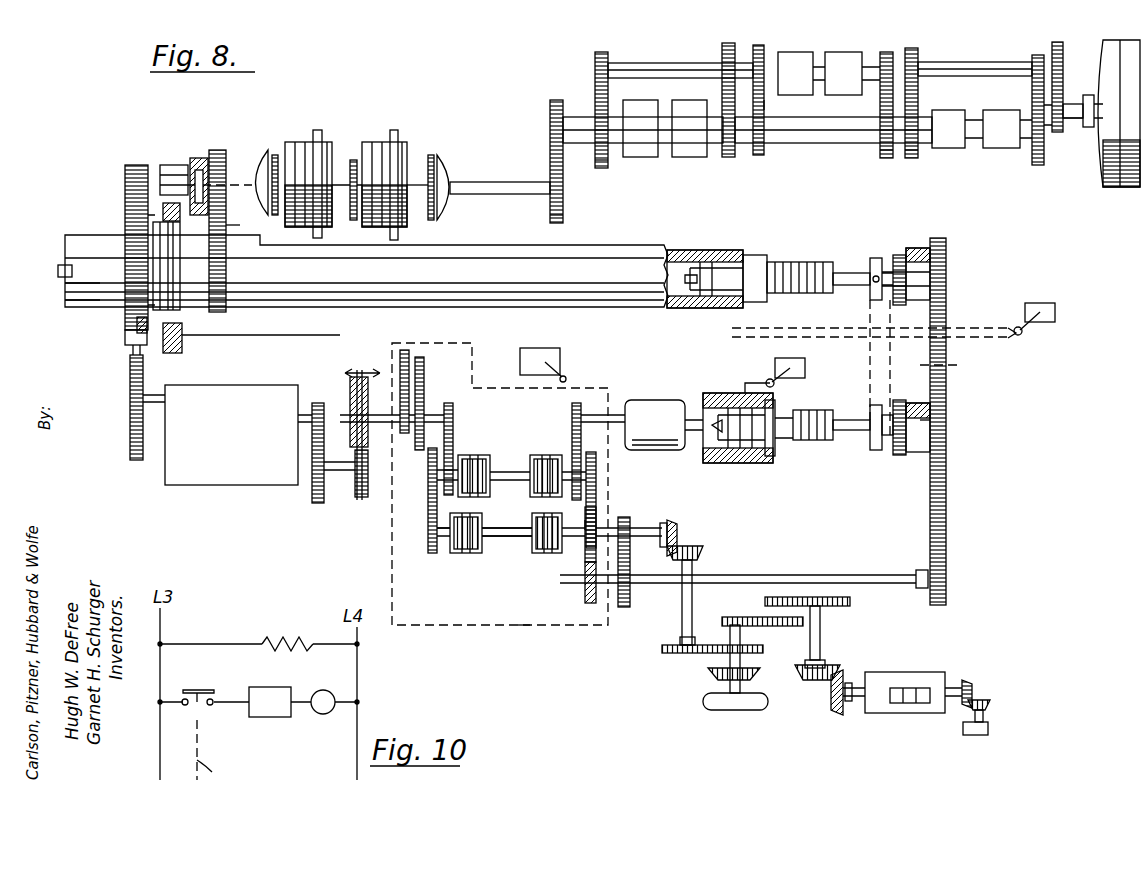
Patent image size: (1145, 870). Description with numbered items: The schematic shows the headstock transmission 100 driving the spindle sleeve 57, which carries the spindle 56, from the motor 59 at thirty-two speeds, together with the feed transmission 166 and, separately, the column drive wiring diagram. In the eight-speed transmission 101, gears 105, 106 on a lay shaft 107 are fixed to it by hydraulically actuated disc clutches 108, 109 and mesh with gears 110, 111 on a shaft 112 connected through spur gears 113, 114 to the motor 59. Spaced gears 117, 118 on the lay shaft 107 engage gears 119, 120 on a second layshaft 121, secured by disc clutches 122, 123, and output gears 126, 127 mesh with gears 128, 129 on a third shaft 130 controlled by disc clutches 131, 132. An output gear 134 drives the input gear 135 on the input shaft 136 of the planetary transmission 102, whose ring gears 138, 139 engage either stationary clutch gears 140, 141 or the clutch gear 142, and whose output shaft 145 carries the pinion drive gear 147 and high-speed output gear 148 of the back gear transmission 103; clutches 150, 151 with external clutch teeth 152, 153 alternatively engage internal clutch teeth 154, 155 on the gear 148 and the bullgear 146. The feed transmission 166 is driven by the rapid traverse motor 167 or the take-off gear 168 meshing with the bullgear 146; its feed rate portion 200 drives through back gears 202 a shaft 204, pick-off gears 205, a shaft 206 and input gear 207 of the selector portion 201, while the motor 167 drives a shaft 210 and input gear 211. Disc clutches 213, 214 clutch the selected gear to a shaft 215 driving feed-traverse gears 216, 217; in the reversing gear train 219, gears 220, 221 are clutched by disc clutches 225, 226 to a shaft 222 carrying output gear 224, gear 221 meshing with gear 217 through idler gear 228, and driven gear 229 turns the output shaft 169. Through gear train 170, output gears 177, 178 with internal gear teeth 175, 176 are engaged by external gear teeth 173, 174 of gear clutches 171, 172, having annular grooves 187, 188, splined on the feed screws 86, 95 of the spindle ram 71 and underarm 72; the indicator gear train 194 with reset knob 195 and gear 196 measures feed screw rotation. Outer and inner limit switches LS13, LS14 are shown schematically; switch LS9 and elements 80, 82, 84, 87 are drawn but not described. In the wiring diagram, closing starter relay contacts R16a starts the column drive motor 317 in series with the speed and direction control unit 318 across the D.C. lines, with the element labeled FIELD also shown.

In FIG. 8, the spindle 56 is at (64, 297).
In FIG. 8, the spindle sleeve 57 is at (95, 305).
In FIG. 8, the spindle sleeve motor 59 is at (1112, 55).
In FIG. 8, the spindle ram 71 is at (745, 250).
In FIG. 8, the underarm 72 is at (714, 393).
In FIG. 8, the bevel gear 80 is at (710, 676).
In FIG. 8, the counter 82 is at (905, 672).
In FIG. 8, the dial 84 is at (735, 710).
In FIG. 8, the feed screw 86 is at (810, 262).
In FIG. 8, the hub 87 is at (760, 262).
In FIG. 8, the feed screw 95 is at (810, 410).
In FIG. 8, the multi-speed transmission 100 is at (1038, 211).
In FIG. 8, the eight-speed transmission 101 is at (812, 166).
In FIG. 8, the three-speed planetary speed reduction transmission 102 is at (407, 124).
In FIG. 8, the two-speed high-low back gear transmission 103 is at (113, 217).
In FIG. 8, the gear 105 is at (1037, 165).
In FIG. 8, the gear 106 is at (910, 158).
In FIG. 8, the lay shaft 107 is at (872, 140).
In FIG. 8, the hydraulically actuated disc clutch 108 is at (1003, 140).
In FIG. 8, the hydraulically actuated disc clutch 109 is at (952, 140).
In FIG. 8, the gear 110 is at (1038, 55).
In FIG. 8, the gear 111 is at (914, 50).
In FIG. 8, the shaft 112 is at (972, 62).
In FIG. 8, the spur gear 113 is at (1060, 45).
In FIG. 8, the spur gear 114 is at (1058, 132).
In FIG. 8, the gear 117 is at (886, 158).
In FIG. 8, the gear 118 is at (764, 145).
In FIG. 8, the gear 119 is at (887, 52).
In FIG. 8, the gear 120 is at (758, 45).
In FIG. 8, the second layshaft 121 is at (818, 82).
In FIG. 8, the hydraulically actuated disc clutch 122 is at (848, 52).
In FIG. 8, the hydraulically actuated disc clutch 123 is at (795, 52).
In FIG. 8, the output gear 126 is at (722, 52).
In FIG. 8, the output gear 127 is at (603, 52).
In FIG. 8, the gear 128 is at (728, 157).
In FIG. 8, the gear 129 is at (600, 168).
In FIG. 8, the third shaft 130 is at (577, 117).
In FIG. 8, the hydraulically actuated disc clutch 131 is at (688, 150).
In FIG. 8, the hydraulically actuated disc clutch 132 is at (640, 150).
In FIG. 8, the output gear 134 is at (550, 127).
In FIG. 8, the input gear 135 is at (558, 215).
In FIG. 8, the input shaft 136 is at (480, 182).
In FIG. 8, the ring gear 138 is at (318, 142).
In FIG. 8, the ring gear 139 is at (448, 210).
In FIG. 8, the stationary clutch gear 140 is at (276, 155).
In FIG. 8, the stationary clutch gear 141 is at (432, 155).
In FIG. 8, the clutch gear 142 is at (354, 160).
In FIG. 8, the output shaft 145 is at (175, 144).
In FIG. 8, the bullgear 146 is at (132, 350).
In FIG. 8, the pinion drive gear 147 is at (125, 168).
In FIG. 8, the high-speed output gear 148 is at (220, 150).
In FIG. 8, the clutch 150 is at (175, 165).
In FIG. 8, the clutch 151 is at (172, 353).
In FIG. 8, the external clutch teeth 152 is at (235, 224).
In FIG. 8, the external clutch teeth 153 is at (150, 251).
In FIG. 8, the internal clutch teeth 154 is at (199, 158).
In FIG. 8, the internal clutch teeth 155 is at (130, 340).
In FIG. 8, the feed transmission 166 is at (294, 516).
In FIG. 8, the rapid traverse motor 167 is at (650, 400).
In FIG. 8, the take-off gear 168 is at (148, 425).
In FIG. 8, the output shaft 169 is at (765, 575).
In FIG. 8, the gear train 170 is at (963, 536).
In FIG. 8, the gear clutch 171 is at (872, 258).
In FIG. 8, the gear clutch 172 is at (870, 445).
In FIG. 8, the external gear teeth 173 is at (934, 240).
In FIG. 8, the external gear teeth 174 is at (899, 455).
In FIG. 8, the internal gear teeth 175 is at (928, 262).
In FIG. 8, the internal gear teeth 176 is at (935, 442).
In FIG. 8, the output gear 177 is at (946, 283).
In FIG. 8, the output gear 178 is at (940, 410).
In FIG. 8, the annular groove 187 is at (898, 255).
In FIG. 8, the annular groove 188 is at (886, 455).
In FIG. 8, the indicator transmission 194 is at (654, 663).
In FIG. 8, the reset knob 195 is at (978, 735).
In FIG. 8, the gear 196 is at (968, 684).
In FIG. 8, the feed rate selector transmission portion 200 is at (186, 477).
In FIG. 8, the direction and traverse selector transmission portion 201 is at (518, 625).
In FIG. 8, the back gears 202 is at (350, 500).
In FIG. 8, the shaft 204 is at (380, 415).
In FIG. 8, the pick-off gears 205 is at (425, 360).
In FIG. 8, the shaft 206 is at (435, 415).
In FIG. 8, the input gear 207 is at (455, 416).
In FIG. 8, the shaft 210 is at (598, 415).
In FIG. 8, the input gear 211 is at (578, 403).
In FIG. 8, the disc clutch 213 is at (478, 455).
In FIG. 8, the disc clutch 214 is at (540, 455).
In FIG. 8, the shaft 215 is at (505, 472).
In FIG. 8, the feed-traverse gear 216 is at (426, 516).
In FIG. 8, the feed-traverse gear 217 is at (598, 472).
In FIG. 8, the reversing gear train 219 is at (502, 560).
In FIG. 8, the gear 220 is at (428, 550).
In FIG. 8, the gear 221 is at (585, 550).
In FIG. 8, the shaft 222 is at (506, 528).
In FIG. 8, the output gear 224 is at (635, 528).
In FIG. 8, the disc clutch 225 is at (458, 553).
In FIG. 8, the disc clutch 226 is at (545, 553).
In FIG. 8, the idler gear 228 is at (555, 562).
In FIG. 8, the driven gear 229 is at (624, 607).
In FIG. 10, the drive motor 317 is at (322, 714).
In FIG. 10, the speed and direction control unit 318 is at (270, 717).
In FIG. 8, the limit switch LS9 is at (1050, 298).
In FIG. 8, the outer limit switch LS13 is at (540, 342).
In FIG. 8, the inner limit switch LS14 is at (800, 358).
In FIG. 10, the starter relay contacts R16a is at (200, 686).
In FIG. 10, the field winding FIELD is at (287, 635).